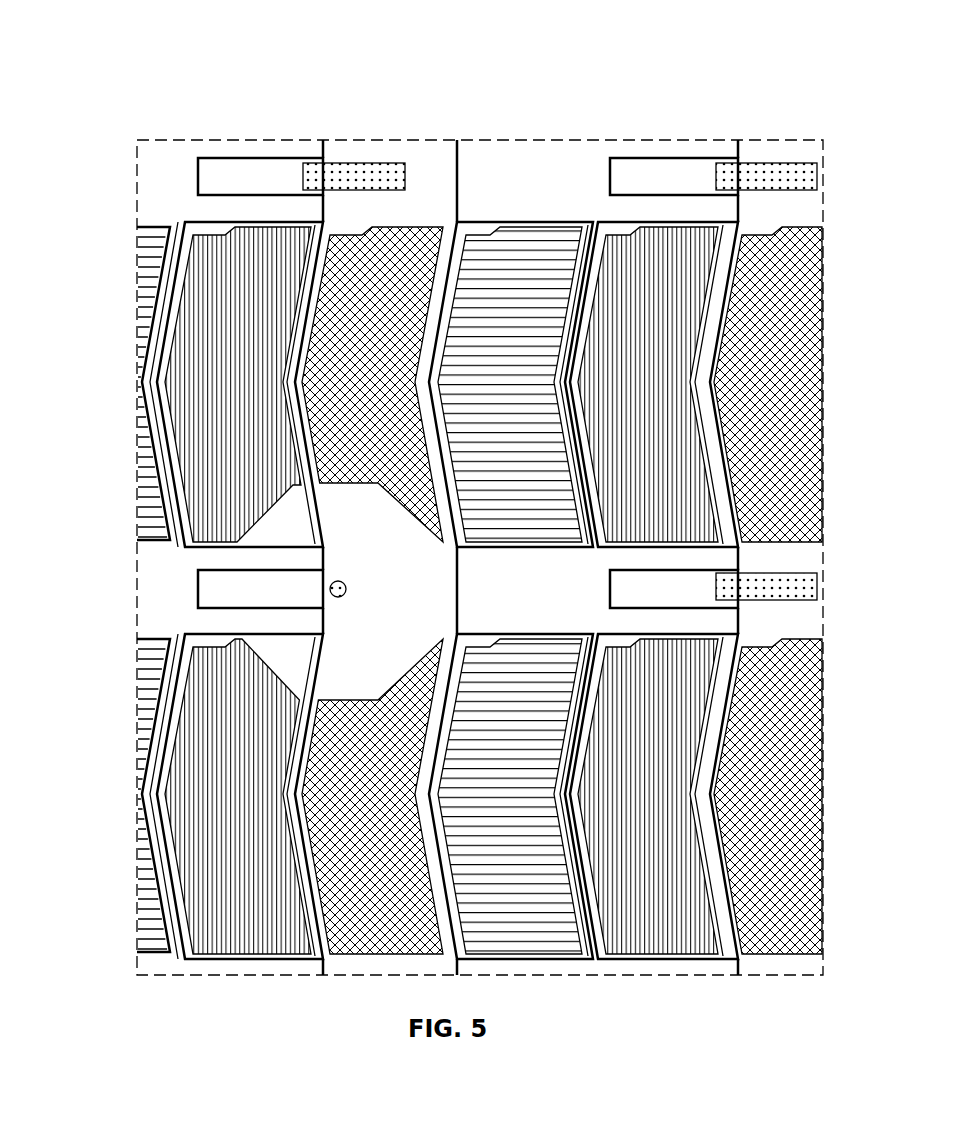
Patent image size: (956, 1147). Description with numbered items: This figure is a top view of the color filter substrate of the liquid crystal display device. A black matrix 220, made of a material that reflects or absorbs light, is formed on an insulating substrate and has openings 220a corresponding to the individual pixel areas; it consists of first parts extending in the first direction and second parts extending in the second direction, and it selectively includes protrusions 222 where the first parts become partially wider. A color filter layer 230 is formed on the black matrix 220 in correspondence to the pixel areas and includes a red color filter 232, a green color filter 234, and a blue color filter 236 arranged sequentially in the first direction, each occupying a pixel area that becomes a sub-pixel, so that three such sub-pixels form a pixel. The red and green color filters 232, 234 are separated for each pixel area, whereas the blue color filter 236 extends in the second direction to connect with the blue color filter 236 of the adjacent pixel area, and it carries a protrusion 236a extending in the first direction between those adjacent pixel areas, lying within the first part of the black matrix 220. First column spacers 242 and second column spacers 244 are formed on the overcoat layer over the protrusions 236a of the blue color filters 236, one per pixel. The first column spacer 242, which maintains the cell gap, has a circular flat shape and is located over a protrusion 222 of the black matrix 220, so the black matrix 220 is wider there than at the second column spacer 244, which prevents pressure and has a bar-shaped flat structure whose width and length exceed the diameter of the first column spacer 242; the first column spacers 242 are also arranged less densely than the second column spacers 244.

The black matrix 220 is at (158, 578).
The opening 220a is at (178, 342).
The protrusion 222 is at (293, 667).
The color filter layer 230 is at (602, 45).
The red color filter 232 is at (628, 222).
The green color filter 234 is at (528, 222).
The blue color filter 236 is at (460, 163).
The protrusion 236a is at (245, 157).
The first column spacer 242 is at (330, 590).
The second column spacer 244 is at (357, 162).